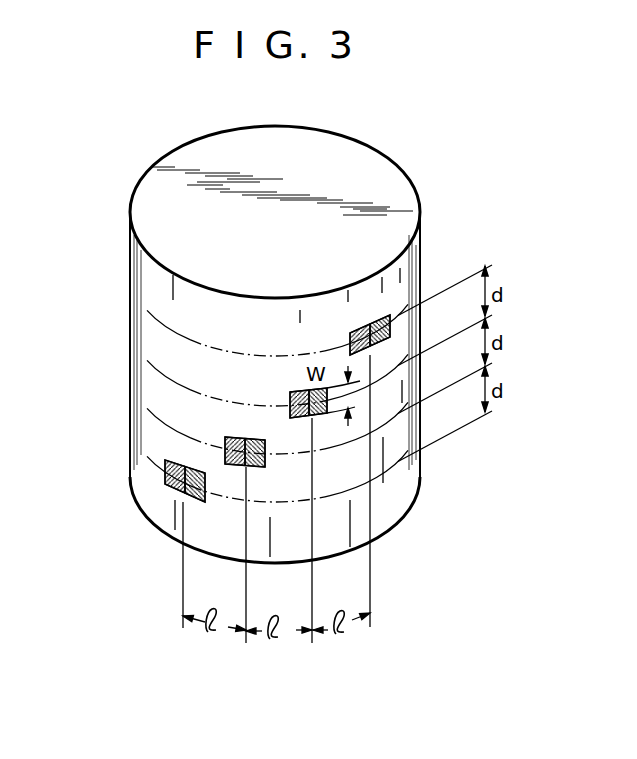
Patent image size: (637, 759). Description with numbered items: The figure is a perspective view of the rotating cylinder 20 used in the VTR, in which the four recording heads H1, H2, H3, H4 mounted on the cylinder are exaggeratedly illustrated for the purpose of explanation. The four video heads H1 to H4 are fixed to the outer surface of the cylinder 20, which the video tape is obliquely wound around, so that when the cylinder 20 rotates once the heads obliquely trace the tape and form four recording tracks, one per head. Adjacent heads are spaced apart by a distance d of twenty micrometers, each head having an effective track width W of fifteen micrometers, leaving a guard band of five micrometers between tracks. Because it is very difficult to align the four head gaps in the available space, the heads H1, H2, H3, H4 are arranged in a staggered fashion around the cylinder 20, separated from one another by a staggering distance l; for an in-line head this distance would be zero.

The rotating cylinder 20 is at (150, 193).
The recording head H1 is at (168, 462).
The recording head H2 is at (228, 438).
The recording head H3 is at (290, 395).
The recording head H4 is at (350, 334).